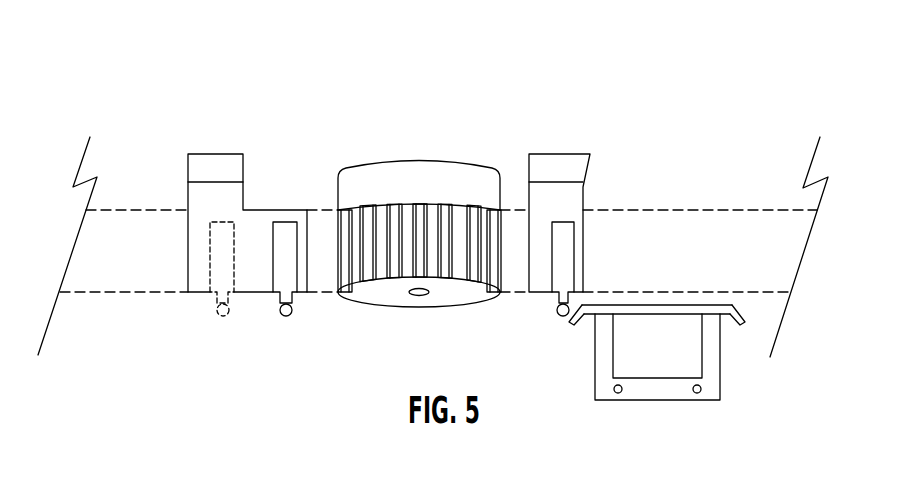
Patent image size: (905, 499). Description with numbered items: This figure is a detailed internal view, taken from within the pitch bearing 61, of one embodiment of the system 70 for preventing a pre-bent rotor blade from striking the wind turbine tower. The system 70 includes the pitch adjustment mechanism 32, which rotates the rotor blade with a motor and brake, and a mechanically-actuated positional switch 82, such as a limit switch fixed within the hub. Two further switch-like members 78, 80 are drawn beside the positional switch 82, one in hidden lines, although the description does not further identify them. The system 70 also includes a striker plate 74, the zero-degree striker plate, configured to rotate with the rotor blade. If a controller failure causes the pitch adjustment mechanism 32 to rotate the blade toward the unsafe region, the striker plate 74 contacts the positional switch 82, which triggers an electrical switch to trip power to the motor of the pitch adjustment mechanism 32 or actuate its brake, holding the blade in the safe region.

The system 70 is at (200, 92).
The pitch bearing 61 is at (132, 293).
The locating pin 80 is at (215, 235).
The positional switch 82 is at (288, 227).
The pitch adjustment mechanism 32 is at (443, 207).
The locating pin 78 is at (575, 247).
The striker plate 74 is at (730, 305).